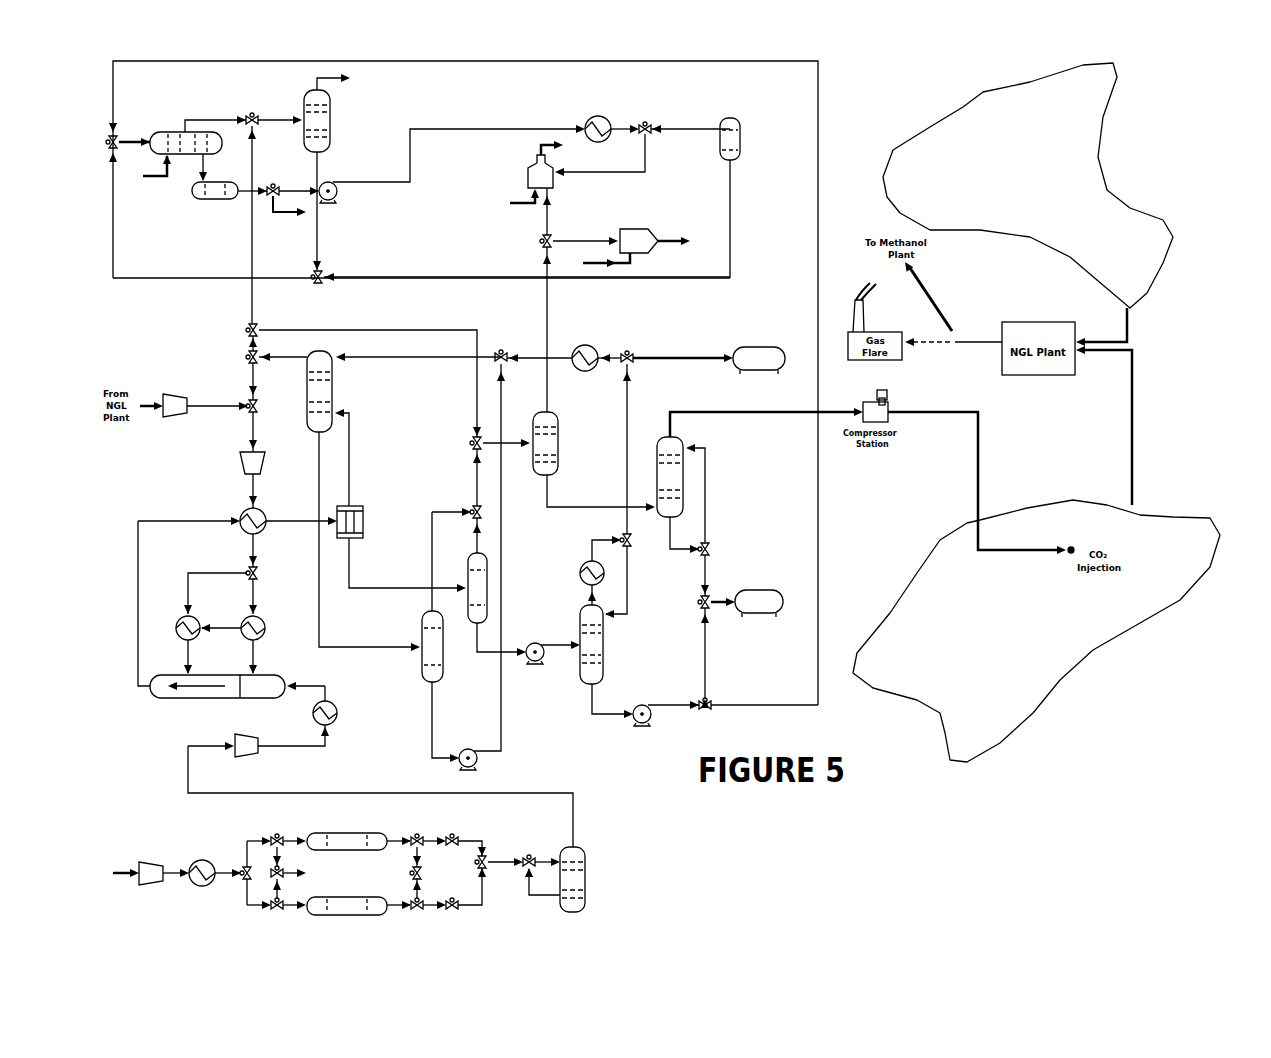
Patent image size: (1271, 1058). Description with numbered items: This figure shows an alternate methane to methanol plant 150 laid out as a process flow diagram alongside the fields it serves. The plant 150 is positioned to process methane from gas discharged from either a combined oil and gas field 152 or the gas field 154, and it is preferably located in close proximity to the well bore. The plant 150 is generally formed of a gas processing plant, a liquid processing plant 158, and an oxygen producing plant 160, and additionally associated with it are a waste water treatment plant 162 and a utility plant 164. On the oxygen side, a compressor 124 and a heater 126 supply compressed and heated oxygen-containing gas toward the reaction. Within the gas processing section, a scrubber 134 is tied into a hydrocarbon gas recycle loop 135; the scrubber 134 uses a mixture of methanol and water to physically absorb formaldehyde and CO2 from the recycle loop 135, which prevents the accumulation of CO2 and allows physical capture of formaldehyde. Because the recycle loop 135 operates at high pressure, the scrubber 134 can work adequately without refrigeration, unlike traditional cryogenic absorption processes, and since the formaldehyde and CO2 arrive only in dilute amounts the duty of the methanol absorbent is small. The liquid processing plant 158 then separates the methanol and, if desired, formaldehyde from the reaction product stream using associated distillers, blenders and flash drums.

The methane to methanol plant 150 is at (465, 370).
The waste water treatment plant 162 is at (186, 143).
The utility plant 164 is at (625, 264).
The hydrocarbon gas recycle loop 135 is at (265, 375).
The scrubber 134 is at (404, 501).
The liquid processing plant 158 is at (678, 355).
The compressor 124 is at (223, 743).
The heater 126 is at (311, 716).
The oxygen producing plant 160 is at (349, 870).
The combined oil and gas field 152 is at (1028, 185).
The gas field 154 is at (1036, 631).